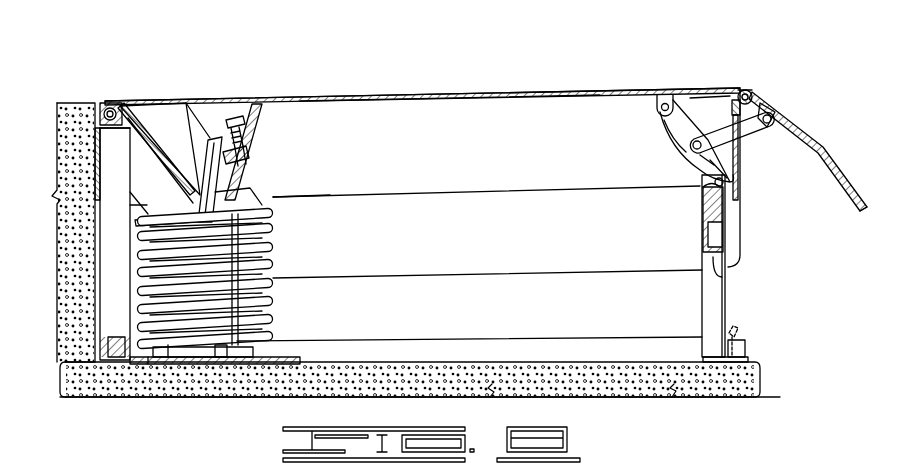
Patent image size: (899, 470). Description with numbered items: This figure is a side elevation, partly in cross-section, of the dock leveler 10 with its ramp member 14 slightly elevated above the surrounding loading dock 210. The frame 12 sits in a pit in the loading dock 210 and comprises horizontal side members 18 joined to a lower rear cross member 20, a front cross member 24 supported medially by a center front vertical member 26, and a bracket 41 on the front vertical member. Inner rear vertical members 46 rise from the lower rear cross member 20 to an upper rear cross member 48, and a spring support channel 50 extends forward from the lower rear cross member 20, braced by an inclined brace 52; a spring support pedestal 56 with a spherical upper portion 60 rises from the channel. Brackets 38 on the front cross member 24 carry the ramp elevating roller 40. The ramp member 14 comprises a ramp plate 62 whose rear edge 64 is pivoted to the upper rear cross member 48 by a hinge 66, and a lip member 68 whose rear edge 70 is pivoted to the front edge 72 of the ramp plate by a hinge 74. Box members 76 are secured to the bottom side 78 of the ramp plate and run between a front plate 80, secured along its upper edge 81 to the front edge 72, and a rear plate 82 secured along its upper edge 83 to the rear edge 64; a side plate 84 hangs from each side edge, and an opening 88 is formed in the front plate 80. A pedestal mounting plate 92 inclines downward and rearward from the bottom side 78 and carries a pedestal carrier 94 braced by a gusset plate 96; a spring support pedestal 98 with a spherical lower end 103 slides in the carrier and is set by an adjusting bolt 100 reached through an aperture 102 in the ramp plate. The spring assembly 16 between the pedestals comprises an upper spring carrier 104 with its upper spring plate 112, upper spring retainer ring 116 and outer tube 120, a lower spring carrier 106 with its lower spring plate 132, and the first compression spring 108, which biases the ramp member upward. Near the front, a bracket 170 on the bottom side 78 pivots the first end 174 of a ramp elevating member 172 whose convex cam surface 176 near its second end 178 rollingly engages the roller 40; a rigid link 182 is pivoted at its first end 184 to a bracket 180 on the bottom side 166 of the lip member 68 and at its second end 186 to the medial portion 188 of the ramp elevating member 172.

The dock leveler 10 is at (608, 50).
The frame 12 is at (87, 181).
The ramp member 14 is at (306, 96).
The spring assembly 16 is at (283, 207).
The horizontal side member 18 is at (438, 342).
The lower rear cross member 20 is at (117, 336).
The front cross member 24 is at (722, 275).
The center front vertical member 26 is at (718, 300).
The steel brackets 38 is at (710, 210).
The ramp elevating roller 40 is at (707, 188).
The steel bracket 41 is at (738, 330).
The inner rear vertical member 46 is at (121, 249).
The upper rear cross member 48 is at (95, 128).
The spring support channel 50 is at (148, 364).
The inclined brace 52 is at (144, 189).
The spring support pedestal 56 is at (218, 358).
The upper portion of spring support pedestal 60 is at (262, 349).
The ramp plate 62 is at (324, 97).
The rear edge of ramp plate 64 is at (101, 101).
The hinge 66 is at (111, 107).
The lip member 68 is at (832, 150).
The rear edge of lip member 70 is at (750, 90).
The front edge of ramp plate 72 is at (740, 92).
The hinge 74 is at (741, 88).
The box members 76 is at (430, 190).
The bottom side of ramp plate 78 is at (426, 100).
The front plate 80 is at (738, 203).
The upper edge of front plate 81 is at (730, 98).
The rear plate 82 is at (163, 152).
The upper edge of rear plate 83 is at (135, 110).
The side plate 84 is at (484, 272).
The opening 88 is at (731, 112).
The pedestal mounting plate 92 is at (248, 128).
The pedestal carrier 94 is at (252, 152).
The gusset plate 96 is at (165, 110).
The spring support pedestal 98 is at (230, 168).
The adjusting bolt 100 is at (250, 140).
The aperture 102 is at (253, 103).
The lower end of spring pedestal 103 is at (132, 205).
The upper spring carrier 104 is at (250, 192).
The lower spring carrier 106 is at (190, 364).
The first compression spring 108 is at (276, 240).
The upper spring plate 112 is at (280, 196).
The upper spring retainer ring 116 is at (275, 224).
The outer tube 120 is at (275, 259).
The lower spring plate 132 is at (170, 358).
The bottom side of lip member 166 is at (856, 206).
The steel bracket 170 is at (656, 102).
The ramp elevating member 172 is at (708, 160).
The first end of ramp elevating member 174 is at (674, 128).
The convex cam surface 176 is at (708, 170).
The second end of ramp elevating member 178 is at (724, 180).
The steel bracket 180 is at (773, 120).
The rigid steel link 182 is at (752, 134).
The first end of link 184 is at (770, 124).
The second end of link 186 is at (688, 145).
The medial portion of ramp elevating member 188 is at (692, 146).
The loading dock 210 is at (752, 360).